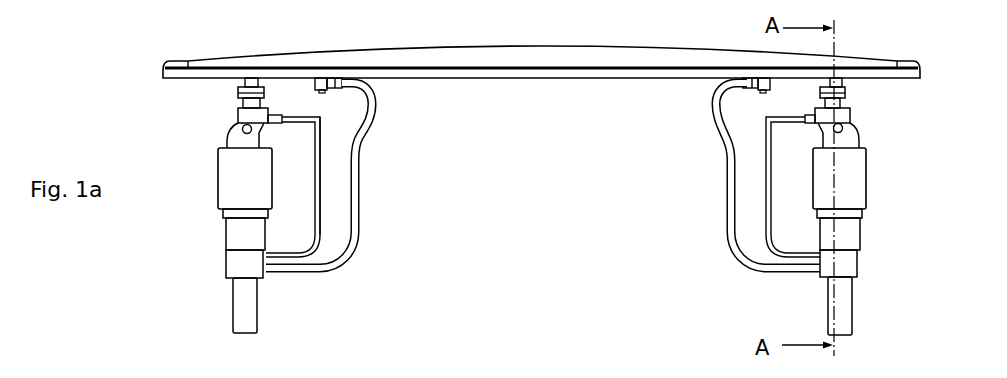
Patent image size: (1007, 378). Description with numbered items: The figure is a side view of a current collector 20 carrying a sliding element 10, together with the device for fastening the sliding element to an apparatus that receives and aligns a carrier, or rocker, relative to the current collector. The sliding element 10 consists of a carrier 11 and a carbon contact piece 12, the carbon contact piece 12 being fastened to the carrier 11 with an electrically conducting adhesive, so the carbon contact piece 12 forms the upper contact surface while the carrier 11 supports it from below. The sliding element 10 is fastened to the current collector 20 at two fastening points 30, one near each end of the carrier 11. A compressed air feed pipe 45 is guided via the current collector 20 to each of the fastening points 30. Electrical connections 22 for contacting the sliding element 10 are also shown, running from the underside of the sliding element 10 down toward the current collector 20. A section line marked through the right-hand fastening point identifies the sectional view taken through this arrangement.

The sliding element 10 is at (541, 88).
The carrier 11 is at (532, 79).
The carbon contact piece 12 is at (503, 62).
The current collector 20 is at (553, 217).
The electrical connections 22 is at (357, 192).
The fastening points 30 is at (204, 111).
The compressed air feed pipe 45 is at (320, 220).